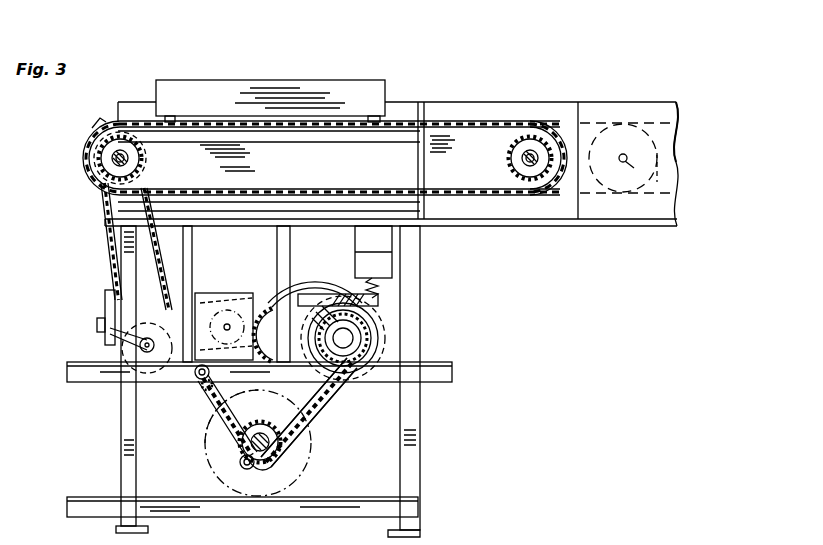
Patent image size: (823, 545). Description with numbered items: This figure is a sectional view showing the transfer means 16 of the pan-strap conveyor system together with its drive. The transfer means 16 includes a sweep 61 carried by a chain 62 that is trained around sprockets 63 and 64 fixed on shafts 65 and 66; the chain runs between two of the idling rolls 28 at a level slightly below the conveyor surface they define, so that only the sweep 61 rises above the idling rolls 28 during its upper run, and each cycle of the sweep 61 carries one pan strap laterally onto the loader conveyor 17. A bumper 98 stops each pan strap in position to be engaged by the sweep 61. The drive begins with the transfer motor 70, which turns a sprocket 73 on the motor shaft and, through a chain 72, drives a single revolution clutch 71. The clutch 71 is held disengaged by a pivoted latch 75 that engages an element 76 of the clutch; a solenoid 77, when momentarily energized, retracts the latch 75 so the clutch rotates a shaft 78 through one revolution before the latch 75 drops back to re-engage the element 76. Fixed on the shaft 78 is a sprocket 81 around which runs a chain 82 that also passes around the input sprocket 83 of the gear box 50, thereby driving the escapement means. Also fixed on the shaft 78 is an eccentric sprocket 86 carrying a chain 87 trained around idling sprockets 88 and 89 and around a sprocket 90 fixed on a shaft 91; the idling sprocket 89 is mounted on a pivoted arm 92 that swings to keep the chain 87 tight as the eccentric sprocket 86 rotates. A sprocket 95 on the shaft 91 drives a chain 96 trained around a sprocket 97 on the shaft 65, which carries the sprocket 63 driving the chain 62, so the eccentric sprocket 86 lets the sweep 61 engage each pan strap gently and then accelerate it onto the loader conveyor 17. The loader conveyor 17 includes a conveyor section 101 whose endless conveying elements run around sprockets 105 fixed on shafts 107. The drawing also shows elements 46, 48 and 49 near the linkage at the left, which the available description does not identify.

The transfer means 16 is at (136, 108).
The loader conveyor 17 is at (672, 112).
The idling rolls 28 is at (310, 140).
The pin 46 is at (96, 324).
The slide block 48 is at (104, 304).
The link arm 49 is at (108, 335).
The gear box 50 is at (200, 292).
The sweep 61 is at (96, 120).
The chain 62 is at (228, 120).
The sprocket 63 is at (147, 160).
The sprocket 64 is at (505, 151).
The shaft 65 is at (111, 158).
The shaft 66 is at (522, 164).
The transfer motor 70 is at (313, 452).
The single revolution clutch 71 is at (397, 323).
The chain 72 is at (332, 406).
The sprocket 73 is at (300, 460).
The pivoted latch 75 is at (310, 290).
The element 76 is at (338, 292).
The solenoid 77 is at (356, 240).
The shaft 78 is at (362, 340).
The sprocket 81 is at (305, 336).
The chain 82 is at (258, 300).
The input sprocket 83 is at (233, 292).
The eccentric sprocket 86 is at (348, 388).
The chain 87 is at (320, 422).
The idling sprocket 88 is at (198, 388).
The idling sprocket 89 is at (240, 464).
The sprocket 90 is at (148, 380).
The shaft 91 is at (138, 380).
The pivoted arm 92 is at (214, 436).
The sprocket 95 is at (122, 402).
The chain 96 is at (106, 241).
The sprocket 97 is at (98, 184).
The bumper 98 is at (288, 82).
The conveyor section 101 is at (680, 110).
The sprocket 105 is at (660, 150).
The shaft 107 is at (650, 174).